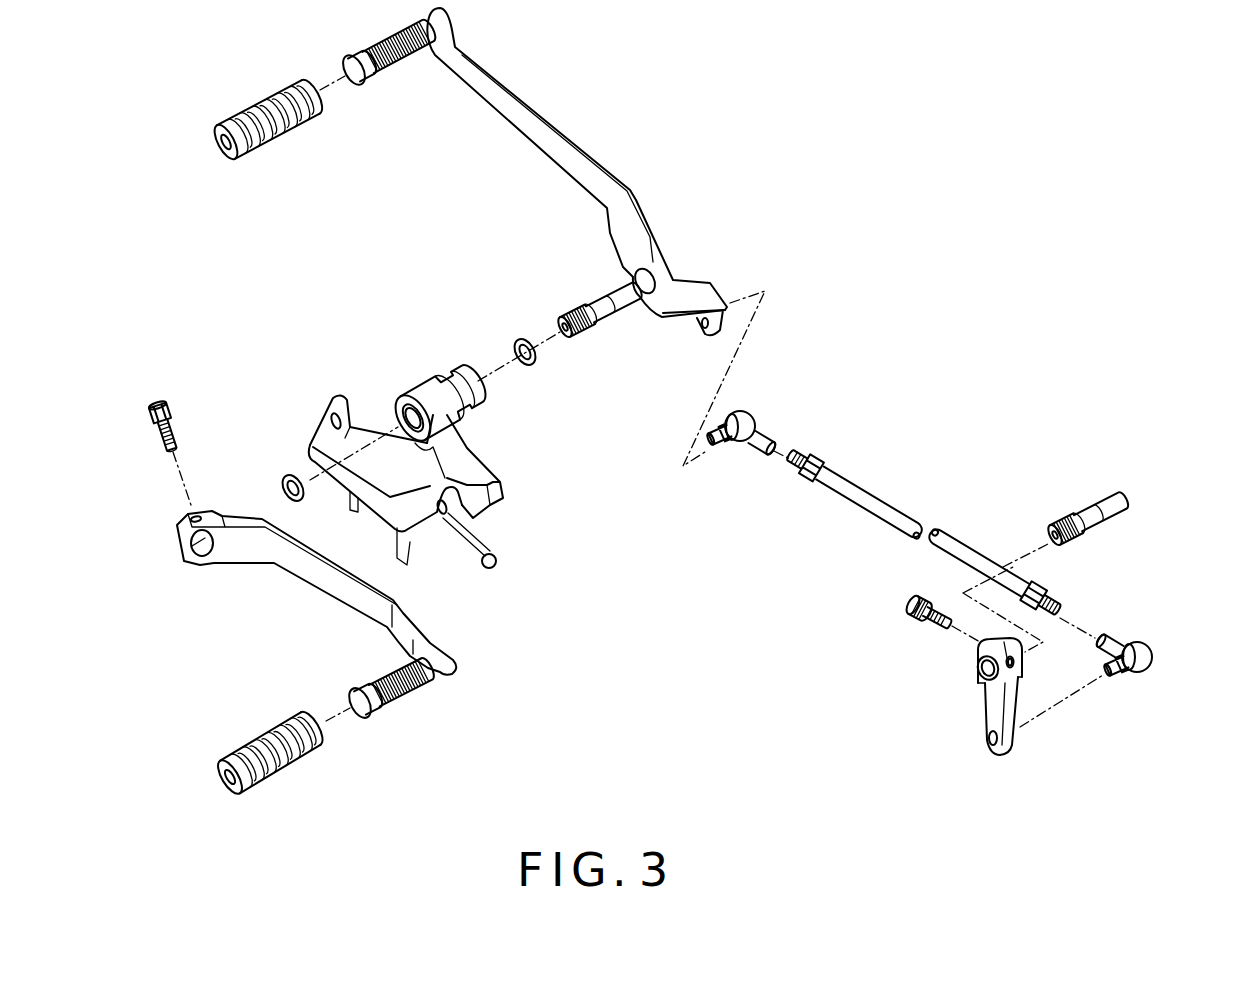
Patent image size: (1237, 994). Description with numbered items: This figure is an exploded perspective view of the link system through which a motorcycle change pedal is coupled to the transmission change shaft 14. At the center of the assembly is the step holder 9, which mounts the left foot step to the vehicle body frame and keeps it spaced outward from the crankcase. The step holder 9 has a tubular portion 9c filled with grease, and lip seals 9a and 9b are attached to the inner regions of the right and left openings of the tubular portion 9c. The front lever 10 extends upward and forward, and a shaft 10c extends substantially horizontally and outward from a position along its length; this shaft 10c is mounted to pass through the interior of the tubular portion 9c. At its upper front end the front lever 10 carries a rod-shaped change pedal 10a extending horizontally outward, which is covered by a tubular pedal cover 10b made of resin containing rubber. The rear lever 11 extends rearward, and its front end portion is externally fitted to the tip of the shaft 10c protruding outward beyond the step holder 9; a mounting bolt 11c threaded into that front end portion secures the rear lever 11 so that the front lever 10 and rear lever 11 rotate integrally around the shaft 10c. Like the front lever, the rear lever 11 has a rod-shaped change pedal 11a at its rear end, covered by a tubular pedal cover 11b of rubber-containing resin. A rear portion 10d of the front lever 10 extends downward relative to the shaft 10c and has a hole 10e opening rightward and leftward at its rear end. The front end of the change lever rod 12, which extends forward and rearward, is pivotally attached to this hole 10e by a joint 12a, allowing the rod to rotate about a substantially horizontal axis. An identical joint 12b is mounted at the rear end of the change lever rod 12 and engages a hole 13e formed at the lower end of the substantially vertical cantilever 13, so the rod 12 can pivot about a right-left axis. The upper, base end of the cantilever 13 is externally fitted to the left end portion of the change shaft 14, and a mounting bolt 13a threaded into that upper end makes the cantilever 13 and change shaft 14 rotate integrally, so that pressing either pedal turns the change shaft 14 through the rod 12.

The step holder 9 is at (487, 460).
The lip seal 9a is at (523, 338).
The lip seal 9b is at (285, 473).
The tubular portion 9c is at (423, 390).
The front lever 10 is at (578, 146).
The change pedal 10a is at (400, 62).
The pedal cover 10b is at (277, 143).
The shaft 10c is at (607, 325).
The rear portion 10d is at (697, 286).
The hole 10e is at (702, 330).
The rear lever 11 is at (310, 580).
The change pedal 11a is at (405, 690).
The pedal cover 11b is at (293, 773).
The mounting bolt 11c is at (158, 405).
The change lever rod 12 is at (867, 487).
The joint 12a is at (754, 415).
The joint 12b is at (1147, 642).
The cantilever 13 is at (984, 706).
The mounting bolt 13a is at (918, 627).
The hole 13e is at (990, 744).
The change shaft 14 is at (1087, 513).